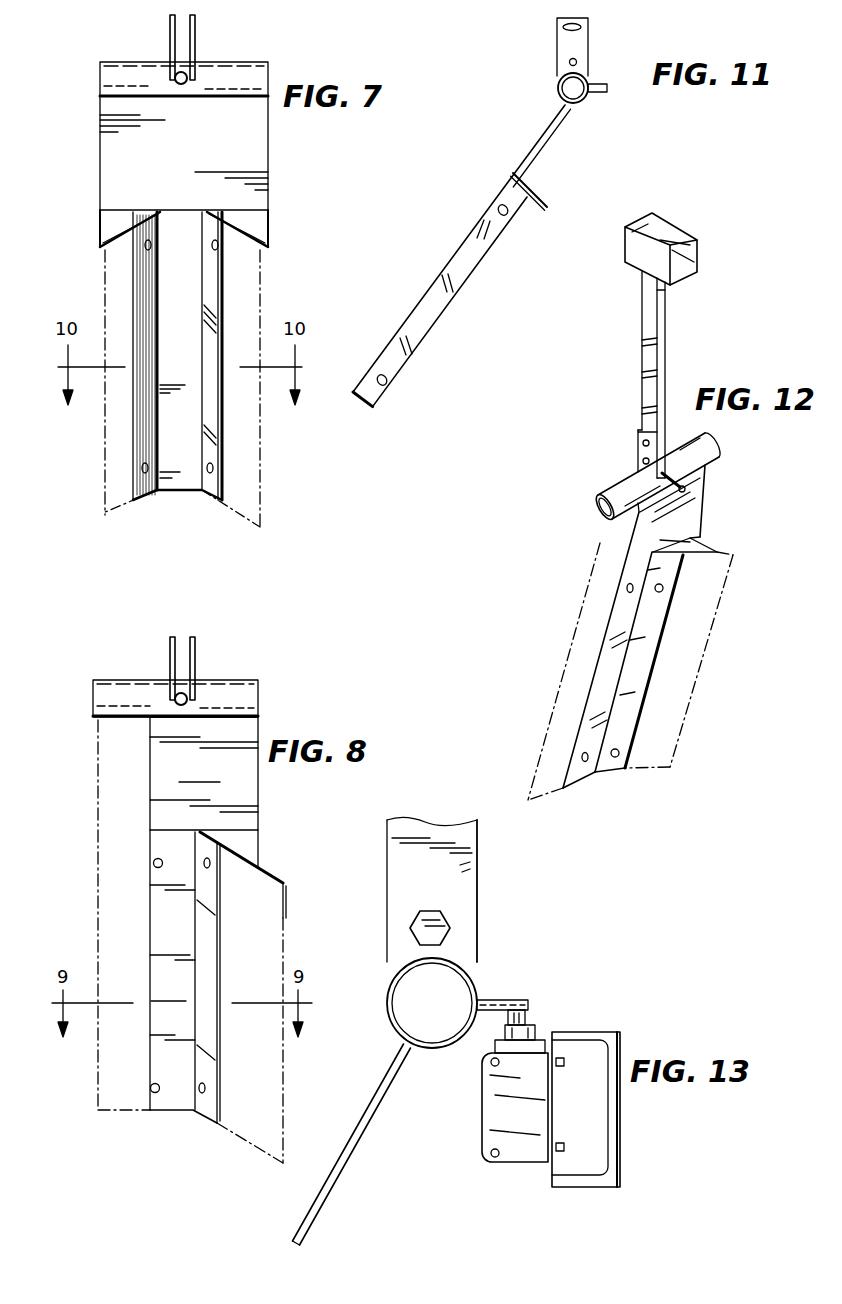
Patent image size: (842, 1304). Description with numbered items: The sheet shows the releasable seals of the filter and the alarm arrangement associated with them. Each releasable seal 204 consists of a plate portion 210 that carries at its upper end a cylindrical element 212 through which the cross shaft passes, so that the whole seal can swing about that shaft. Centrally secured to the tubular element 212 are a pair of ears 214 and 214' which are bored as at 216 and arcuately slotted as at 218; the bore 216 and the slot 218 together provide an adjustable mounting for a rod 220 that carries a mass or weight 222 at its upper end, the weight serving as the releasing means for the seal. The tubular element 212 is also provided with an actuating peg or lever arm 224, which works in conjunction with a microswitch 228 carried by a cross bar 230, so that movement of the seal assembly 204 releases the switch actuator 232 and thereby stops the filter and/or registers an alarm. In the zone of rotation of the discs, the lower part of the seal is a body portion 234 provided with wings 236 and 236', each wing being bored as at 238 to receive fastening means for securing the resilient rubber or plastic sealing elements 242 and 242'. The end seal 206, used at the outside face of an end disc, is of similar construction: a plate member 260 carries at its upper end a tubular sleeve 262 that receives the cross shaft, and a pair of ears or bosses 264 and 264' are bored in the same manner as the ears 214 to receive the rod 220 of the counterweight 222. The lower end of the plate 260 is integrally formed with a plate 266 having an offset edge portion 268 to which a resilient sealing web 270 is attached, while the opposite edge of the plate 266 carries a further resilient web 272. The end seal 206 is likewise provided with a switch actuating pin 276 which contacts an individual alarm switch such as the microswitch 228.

In FIG. 7, the releasable seal 204 is at (282, 164).
In FIG. 12, the end seal 206 is at (582, 571).
In FIG. 8, the end seal 206 is at (283, 687).
In FIG. 7, the plate portion 210 is at (100, 168).
In FIG. 11, the plate portion 210 is at (531, 150).
In FIG. 13, the plate portion 210 is at (333, 1175).
In FIG. 7, the cylindrical element 212 is at (105, 78).
In FIG. 11, the cylindrical element 212 is at (558, 91).
In FIG. 13, the cylindrical element 212 is at (398, 1005).
In FIG. 7, the ear 214 is at (146, 47).
In FIG. 13, the ear 214 is at (452, 889).
In FIG. 7, the ear 214' is at (218, 47).
In FIG. 11, the bore 216 is at (578, 62).
In FIG. 11, the arcuate slot 218 is at (580, 26).
In FIG. 12, the rod 220 is at (660, 378).
In FIG. 12, the weight 222 is at (686, 265).
In FIG. 7, the lever arm 224 is at (188, 84).
In FIG. 11, the lever arm 224 is at (596, 93).
In FIG. 13, the lever arm 224 is at (500, 1000).
In FIG. 13, the microswitch 228 is at (512, 1073).
In FIG. 13, the cross bar 230 is at (597, 1032).
In FIG. 13, the switch actuator 232 is at (528, 1022).
In FIG. 7, the body portion 234 is at (191, 490).
In FIG. 11, the body portion 234 is at (432, 286).
In FIG. 7, the wing 236 is at (235, 379).
In FIG. 11, the wing 236 is at (454, 341).
In FIG. 7, the wing 236' is at (130, 377).
In FIG. 7, the bore 238 is at (219, 245).
In FIG. 11, the bore 238 is at (508, 213).
In FIG. 7, the sealing element 242 is at (276, 388).
In FIG. 7, the sealing element 242' is at (77, 382).
In FIG. 12, the plate member 260 is at (682, 532).
In FIG. 8, the plate member 260 is at (204, 773).
In FIG. 12, the tubular sleeve 262 is at (616, 492).
In FIG. 8, the tubular sleeve 262 is at (93, 697).
In FIG. 8, the ear 264 is at (215, 668).
In FIG. 8, the ear 264' is at (143, 668).
In FIG. 12, the plate 266 is at (585, 766).
In FIG. 8, the plate 266 is at (204, 976).
In FIG. 8, the offset edge portion 268 is at (201, 1116).
In FIG. 8, the resilient sealing web 270 is at (266, 1150).
In FIG. 8, the resilient web 272 is at (116, 848).
In FIG. 12, the switch actuating pin 276 is at (690, 489).
In FIG. 8, the switch actuating pin 276 is at (188, 703).